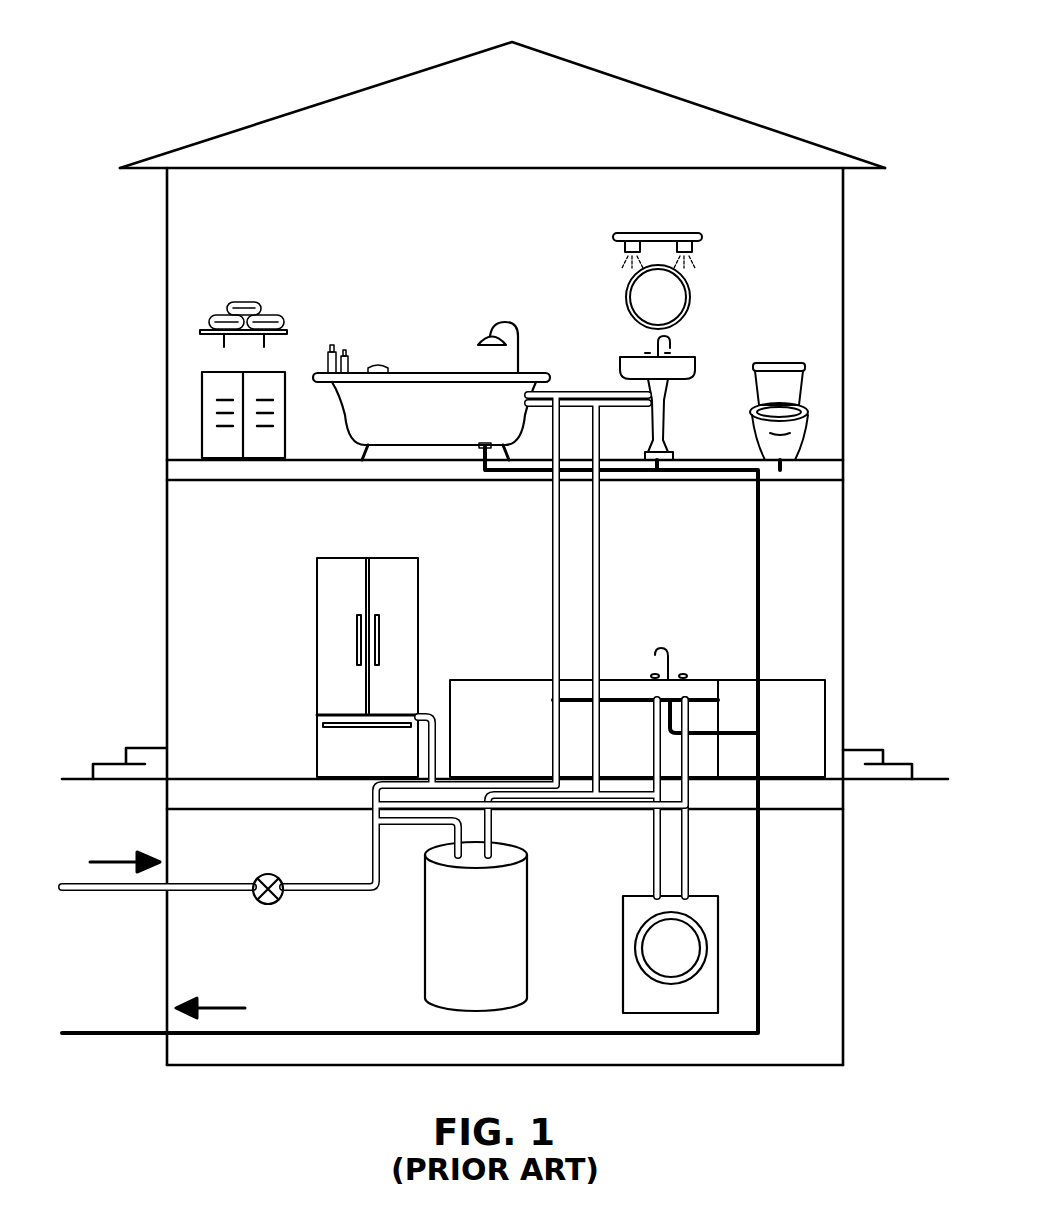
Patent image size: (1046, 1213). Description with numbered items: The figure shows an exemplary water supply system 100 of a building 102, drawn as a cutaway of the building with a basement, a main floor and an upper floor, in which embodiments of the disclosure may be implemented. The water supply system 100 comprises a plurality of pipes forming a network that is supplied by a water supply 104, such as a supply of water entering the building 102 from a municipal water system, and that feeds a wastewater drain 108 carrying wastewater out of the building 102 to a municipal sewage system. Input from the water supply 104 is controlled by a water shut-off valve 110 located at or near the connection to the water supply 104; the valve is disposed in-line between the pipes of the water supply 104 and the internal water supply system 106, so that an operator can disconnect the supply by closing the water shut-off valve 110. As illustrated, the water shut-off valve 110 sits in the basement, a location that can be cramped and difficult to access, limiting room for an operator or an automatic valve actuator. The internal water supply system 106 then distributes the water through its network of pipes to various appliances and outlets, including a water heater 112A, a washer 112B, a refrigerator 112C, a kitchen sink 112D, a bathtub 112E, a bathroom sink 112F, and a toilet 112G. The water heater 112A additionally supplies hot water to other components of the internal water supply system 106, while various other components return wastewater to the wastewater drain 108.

The water supply system 100 is at (343, 25).
The building 102 is at (762, 80).
The water supply 104 is at (112, 915).
The internal water supply system 106 is at (350, 843).
The wastewater drain 108 is at (778, 972).
The water shut-off valve 110 is at (268, 905).
The water heater 112A is at (433, 940).
The washer 112B is at (628, 895).
The refrigerator 112C is at (317, 591).
The kitchen sink 112D is at (707, 680).
The bathtub 112E is at (412, 375).
The bathroom sink 112F is at (692, 355).
The toilet 112G is at (775, 362).